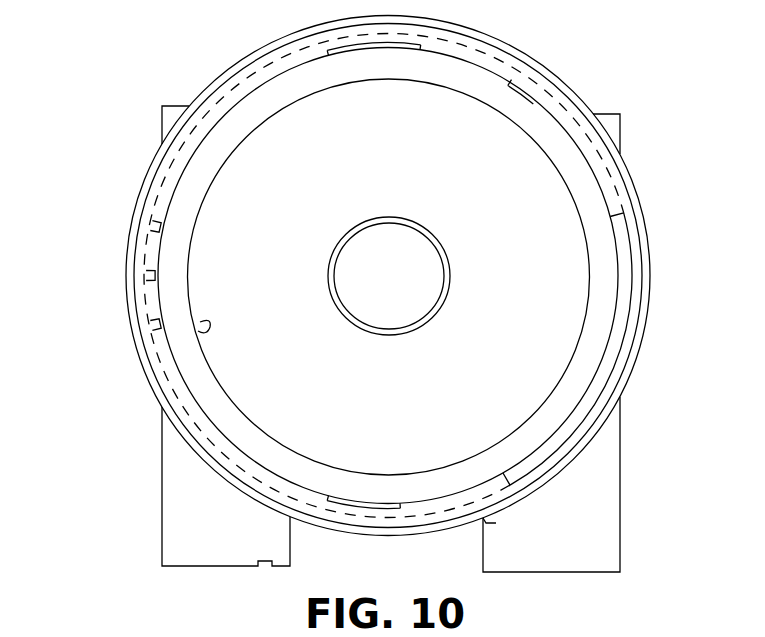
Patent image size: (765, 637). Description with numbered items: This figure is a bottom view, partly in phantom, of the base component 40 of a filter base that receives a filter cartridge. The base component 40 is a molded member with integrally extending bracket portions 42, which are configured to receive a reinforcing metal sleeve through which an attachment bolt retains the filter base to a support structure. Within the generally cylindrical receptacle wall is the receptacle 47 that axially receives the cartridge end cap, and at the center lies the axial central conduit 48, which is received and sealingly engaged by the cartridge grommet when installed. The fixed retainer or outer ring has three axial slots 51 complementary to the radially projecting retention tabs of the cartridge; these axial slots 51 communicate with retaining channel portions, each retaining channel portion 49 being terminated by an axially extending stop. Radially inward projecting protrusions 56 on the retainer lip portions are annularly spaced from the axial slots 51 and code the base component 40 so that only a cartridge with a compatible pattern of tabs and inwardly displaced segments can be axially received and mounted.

The base component 40 is at (98, 153).
The bracket portions 42 is at (170, 533).
The receptacle 47 is at (470, 406).
The axial central conduit 48 is at (330, 253).
The retaining channel portion 49 is at (200, 331).
The axial slots 51 is at (267, 77).
The protrusions 56 is at (513, 78).